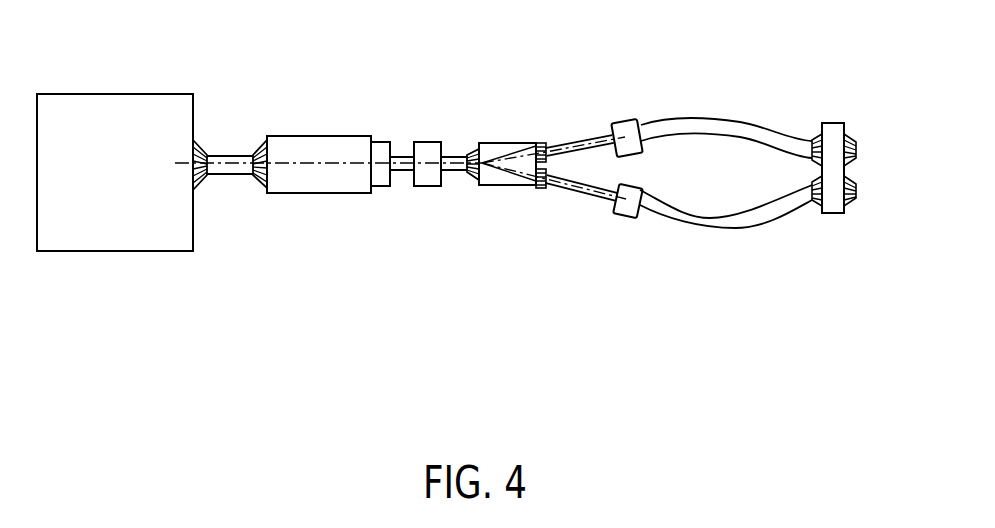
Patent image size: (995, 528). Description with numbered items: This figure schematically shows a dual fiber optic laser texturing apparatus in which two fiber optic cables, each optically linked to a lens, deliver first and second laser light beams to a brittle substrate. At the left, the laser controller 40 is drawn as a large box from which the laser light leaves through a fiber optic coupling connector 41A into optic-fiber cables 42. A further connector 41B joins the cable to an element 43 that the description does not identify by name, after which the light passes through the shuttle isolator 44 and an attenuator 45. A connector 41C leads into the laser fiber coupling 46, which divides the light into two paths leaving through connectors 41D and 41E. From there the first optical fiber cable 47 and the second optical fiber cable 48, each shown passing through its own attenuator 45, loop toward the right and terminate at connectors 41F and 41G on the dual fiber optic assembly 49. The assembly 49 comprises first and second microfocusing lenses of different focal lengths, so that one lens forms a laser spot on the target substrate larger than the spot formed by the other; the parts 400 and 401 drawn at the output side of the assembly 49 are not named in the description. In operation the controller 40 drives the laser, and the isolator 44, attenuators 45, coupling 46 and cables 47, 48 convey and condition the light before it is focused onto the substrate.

The laser controller 40 is at (102, 252).
The fiber optic coupling connector 41A is at (200, 188).
The fiber optic coupling connector 41B is at (262, 140).
The fiber optic coupling connector 41C is at (472, 149).
The fiber optic coupling connector 41D is at (543, 143).
The fiber optic coupling connector 41E is at (540, 190).
The fiber optic coupling connector 41F is at (817, 136).
The fiber optic coupling connector 41G is at (814, 205).
The optic-fiber cables 42 is at (227, 155).
The optical amplifier 43 is at (319, 194).
The shuttle isolator 44 is at (382, 142).
The attenuator 45 is at (426, 187).
The laser fiber coupling 46 is at (506, 143).
The first optical fiber cable 47 is at (724, 120).
The second optical fiber cable 48 is at (733, 232).
The dual fiber optic assembly 49 is at (841, 112).
The output connector 400 is at (857, 146).
The output unit 401 is at (858, 212).